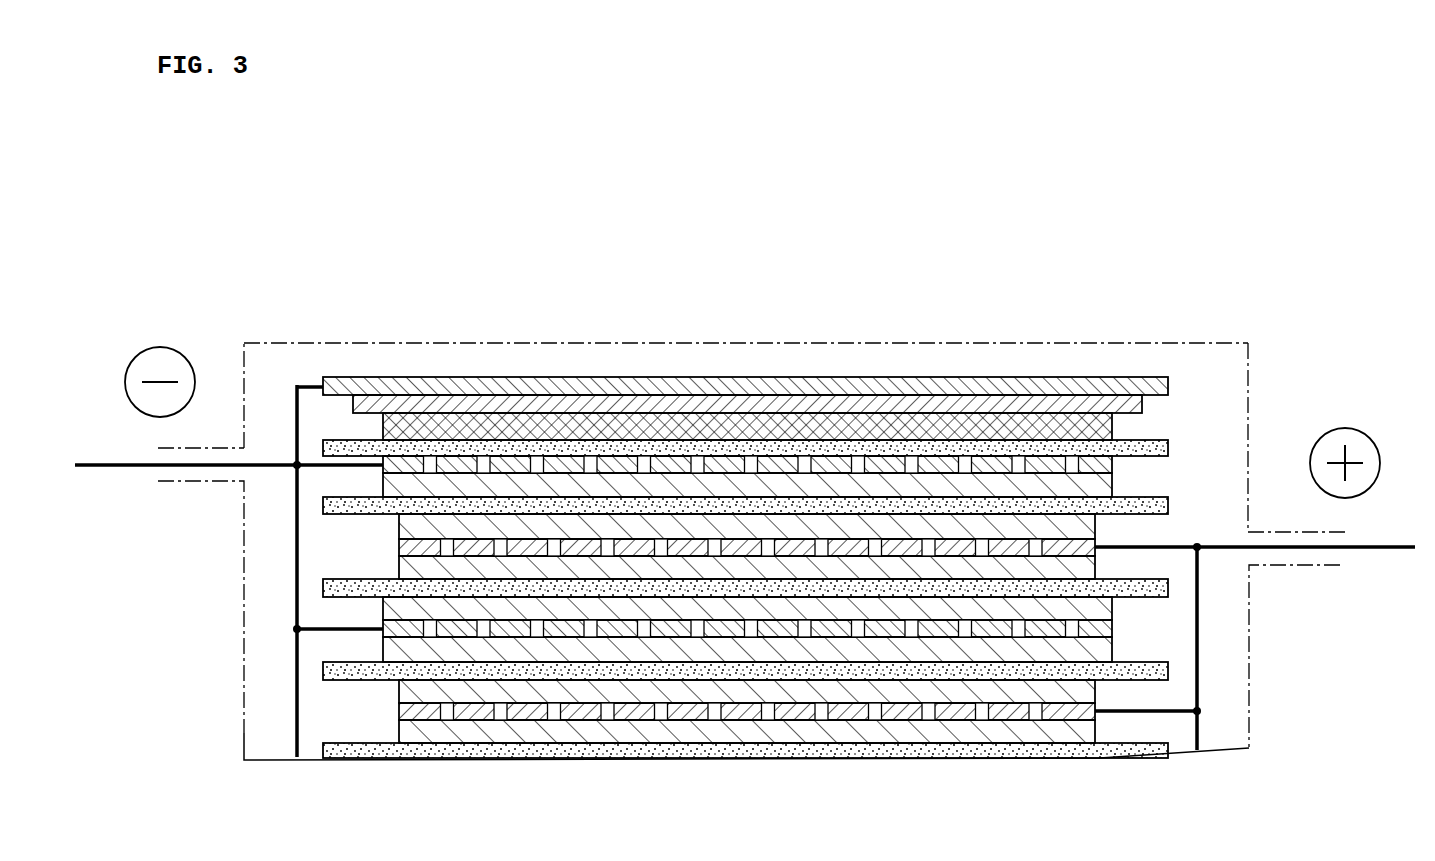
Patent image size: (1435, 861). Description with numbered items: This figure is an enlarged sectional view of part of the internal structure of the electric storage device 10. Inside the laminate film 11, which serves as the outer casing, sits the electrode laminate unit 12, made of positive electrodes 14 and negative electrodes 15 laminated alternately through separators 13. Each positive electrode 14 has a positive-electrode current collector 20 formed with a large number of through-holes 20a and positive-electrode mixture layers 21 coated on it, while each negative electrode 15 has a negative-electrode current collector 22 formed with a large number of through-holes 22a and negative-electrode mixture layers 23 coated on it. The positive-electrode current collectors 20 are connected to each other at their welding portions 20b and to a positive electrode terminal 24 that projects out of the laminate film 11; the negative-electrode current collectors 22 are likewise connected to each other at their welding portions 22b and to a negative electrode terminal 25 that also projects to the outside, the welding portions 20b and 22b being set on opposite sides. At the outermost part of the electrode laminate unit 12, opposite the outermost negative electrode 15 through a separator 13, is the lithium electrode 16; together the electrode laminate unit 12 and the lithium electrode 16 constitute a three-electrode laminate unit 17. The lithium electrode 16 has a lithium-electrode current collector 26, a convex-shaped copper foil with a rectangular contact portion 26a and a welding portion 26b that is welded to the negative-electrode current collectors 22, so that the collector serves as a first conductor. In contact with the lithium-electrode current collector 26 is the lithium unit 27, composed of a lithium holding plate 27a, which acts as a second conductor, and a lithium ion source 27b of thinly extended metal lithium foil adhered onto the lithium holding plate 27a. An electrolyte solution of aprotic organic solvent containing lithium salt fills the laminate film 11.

The electric storage device 10 is at (1053, 222).
The laminate film 11 is at (1077, 342).
The electrode laminate unit 12 is at (1140, 727).
The separator 13 is at (323, 447).
The positive electrode 14 is at (720, 558).
The negative electrode 15 is at (737, 548).
The lithium electrode 16 is at (1126, 362).
The three-electrode laminate unit 17 is at (738, 340).
The positive-electrode current collector 20 is at (744, 558).
The through-hole 20a is at (994, 546).
The welding portion 20b is at (1160, 546).
The positive-electrode mixture layer 21 is at (399, 523).
The negative-electrode current collector 22 is at (711, 548).
The through-hole 22a is at (648, 464).
The welding portion 22b is at (338, 466).
The negative-electrode mixture layer 23 is at (1112, 488).
The positive electrode terminal 24 is at (1400, 545).
The negative electrode terminal 25 is at (97, 463).
The lithium-electrode current collector 26 is at (337, 495).
The contact portion 26a is at (356, 378).
The welding portion 26b is at (311, 385).
The lithium unit 27 is at (850, 407).
The lithium holding plate 27a is at (1142, 406).
The lithium ion source 27b is at (1112, 430).